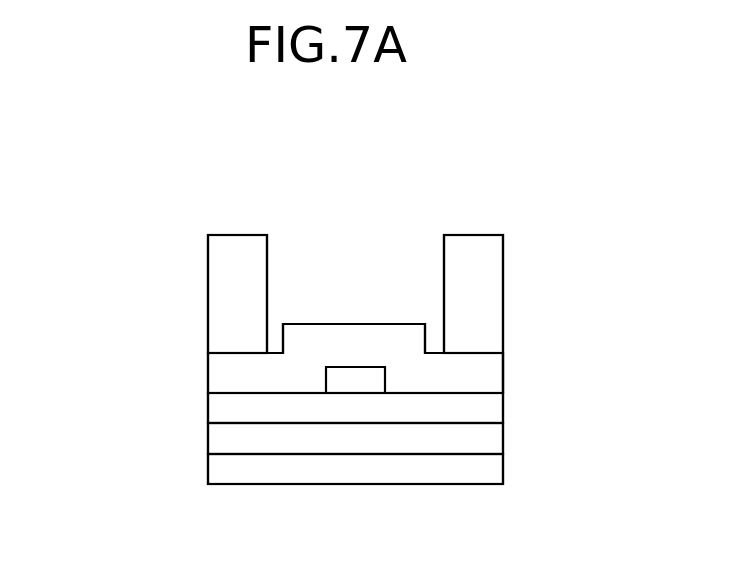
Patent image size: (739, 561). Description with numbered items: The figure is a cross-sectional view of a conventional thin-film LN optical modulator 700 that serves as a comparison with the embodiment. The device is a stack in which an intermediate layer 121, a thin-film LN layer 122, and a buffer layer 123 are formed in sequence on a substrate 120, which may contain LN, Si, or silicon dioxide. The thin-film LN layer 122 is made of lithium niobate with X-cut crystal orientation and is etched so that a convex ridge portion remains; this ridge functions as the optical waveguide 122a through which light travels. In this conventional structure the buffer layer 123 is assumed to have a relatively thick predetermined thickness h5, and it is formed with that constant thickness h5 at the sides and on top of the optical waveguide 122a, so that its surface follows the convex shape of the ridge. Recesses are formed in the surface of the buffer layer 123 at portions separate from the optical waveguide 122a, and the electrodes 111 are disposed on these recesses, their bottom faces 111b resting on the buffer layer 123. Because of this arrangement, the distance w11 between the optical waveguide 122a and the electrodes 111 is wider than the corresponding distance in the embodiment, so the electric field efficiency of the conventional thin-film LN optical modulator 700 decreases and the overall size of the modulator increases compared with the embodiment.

The conventional thin-film LN optical modulator 700 is at (562, 165).
The electrode 111 is at (212, 257).
The buffer layer 123 is at (475, 368).
The optical waveguide 122a is at (357, 378).
The thin-film LN layer 122 is at (487, 407).
The intermediate layer 121 is at (487, 438).
The substrate 120 is at (487, 470).
The bottom surface of electrode / top surface of third layer 111b is at (232, 355).
The distance between the optical waveguide and the electrodes w11 is at (326, 383).
The predetermined thickness of the buffer layer h5 is at (513, 354).